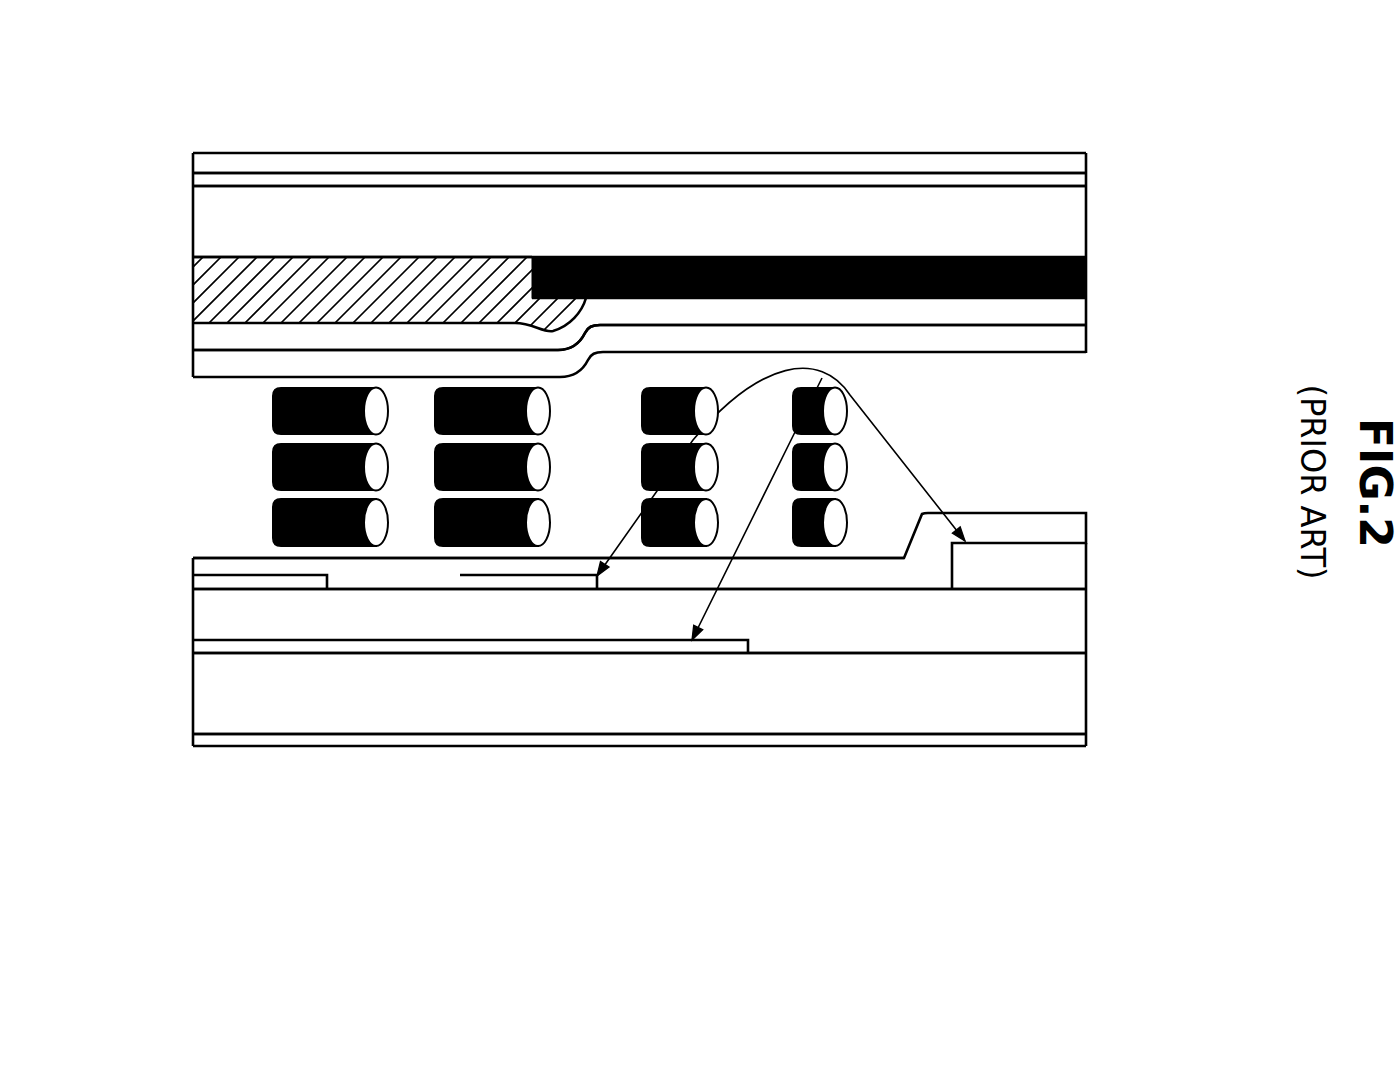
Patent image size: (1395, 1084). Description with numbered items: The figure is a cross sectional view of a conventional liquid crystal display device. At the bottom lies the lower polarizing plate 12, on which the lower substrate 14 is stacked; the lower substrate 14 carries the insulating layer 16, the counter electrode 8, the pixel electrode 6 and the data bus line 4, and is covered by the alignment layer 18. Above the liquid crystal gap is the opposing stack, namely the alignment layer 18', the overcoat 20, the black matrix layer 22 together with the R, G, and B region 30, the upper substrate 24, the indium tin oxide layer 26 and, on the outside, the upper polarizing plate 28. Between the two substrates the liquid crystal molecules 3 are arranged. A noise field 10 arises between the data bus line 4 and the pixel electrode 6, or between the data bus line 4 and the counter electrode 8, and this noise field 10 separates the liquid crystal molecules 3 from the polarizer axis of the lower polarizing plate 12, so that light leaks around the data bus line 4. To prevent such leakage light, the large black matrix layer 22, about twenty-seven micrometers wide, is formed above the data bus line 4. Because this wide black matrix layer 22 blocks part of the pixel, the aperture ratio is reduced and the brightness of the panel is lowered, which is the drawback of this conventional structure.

The upper polarizing plate 28 is at (1066, 163).
The indium tin oxide layer 26 is at (1066, 182).
The upper substrate 24 is at (1066, 231).
The black matrix layer 22 is at (1087, 284).
The R, G, and B region 30 is at (195, 278).
The overcoat 20 is at (1066, 312).
The alignment layer 18' is at (701, 348).
The noise field 10 is at (893, 440).
The liquid crystal molecule 3 is at (837, 470).
The alignment layer 18 is at (697, 549).
The data bus line 4 is at (1066, 570).
The pixel electrode 6 is at (523, 582).
The insulating layer 16 is at (1066, 625).
The counter electrode 8 is at (318, 645).
The lower substrate 14 is at (1064, 685).
The lower polarizing plate 12 is at (1066, 742).